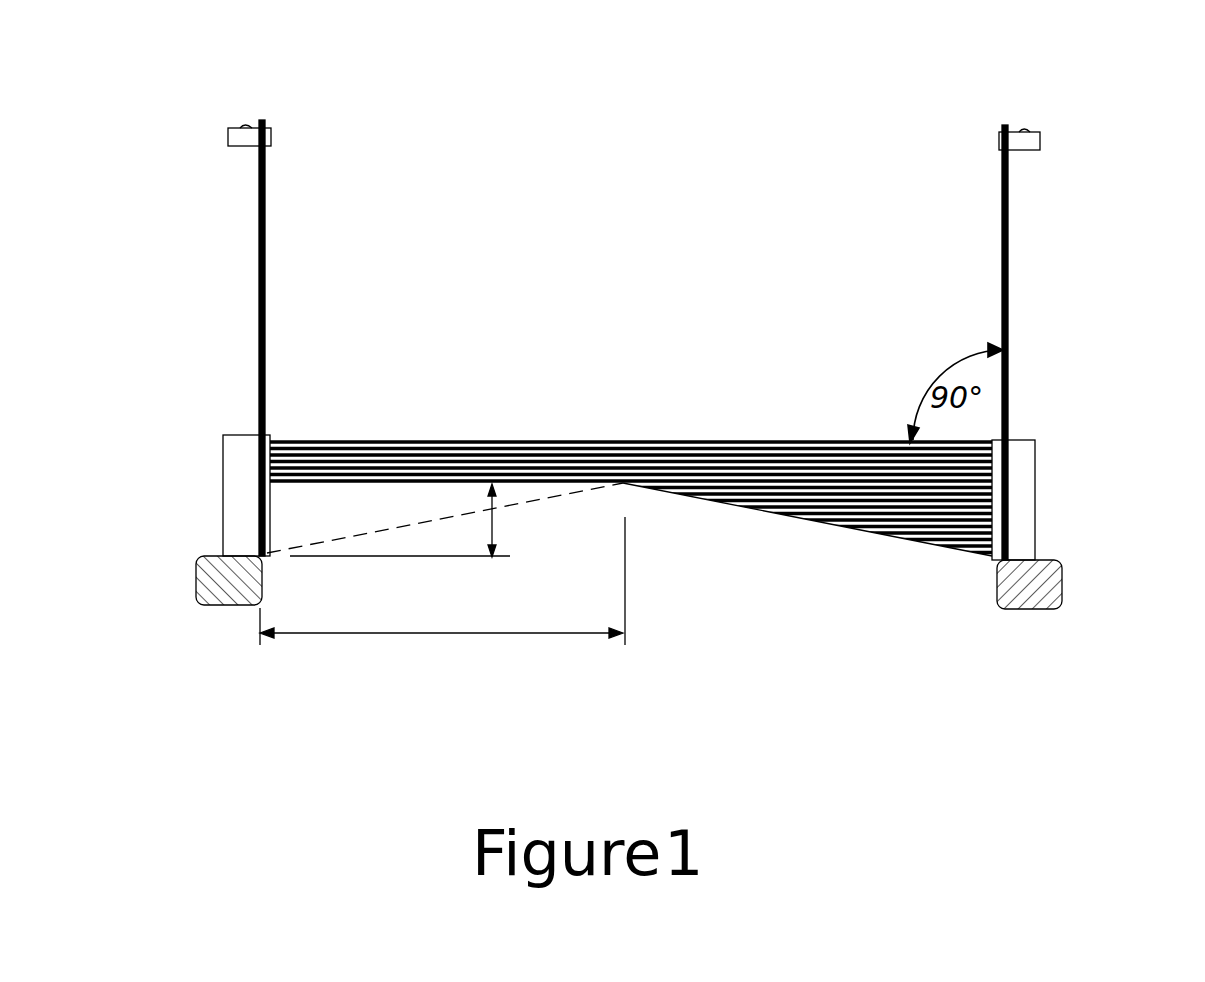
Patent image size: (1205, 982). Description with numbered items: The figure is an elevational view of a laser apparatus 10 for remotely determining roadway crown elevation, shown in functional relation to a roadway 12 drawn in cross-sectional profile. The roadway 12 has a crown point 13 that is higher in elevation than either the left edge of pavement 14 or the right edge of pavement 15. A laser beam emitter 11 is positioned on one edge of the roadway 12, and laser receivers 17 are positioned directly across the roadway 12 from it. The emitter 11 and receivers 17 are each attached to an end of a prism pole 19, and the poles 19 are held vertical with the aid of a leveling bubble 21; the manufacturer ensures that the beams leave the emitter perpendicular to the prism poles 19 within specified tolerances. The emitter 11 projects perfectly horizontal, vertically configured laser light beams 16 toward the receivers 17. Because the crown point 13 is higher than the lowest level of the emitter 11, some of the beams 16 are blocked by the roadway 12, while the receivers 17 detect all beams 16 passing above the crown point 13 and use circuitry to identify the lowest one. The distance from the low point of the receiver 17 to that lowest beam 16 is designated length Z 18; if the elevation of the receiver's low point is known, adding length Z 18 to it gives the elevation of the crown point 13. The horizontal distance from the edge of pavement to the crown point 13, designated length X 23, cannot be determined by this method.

The laser apparatus 10 is at (683, 80).
The laser beam emitter 11 is at (1035, 440).
The roadway 12 is at (631, 509).
The crown point 13 is at (625, 487).
The left edge of pavement 14 is at (196, 562).
The right edge of pavement 15 is at (1062, 565).
The laser light beams 16 is at (583, 440).
The laser receivers 17 is at (235, 435).
The length Z 18 is at (493, 532).
The prism poles 19 is at (265, 162).
The leveling bubble 21 is at (230, 130).
The length X 23 is at (443, 636).